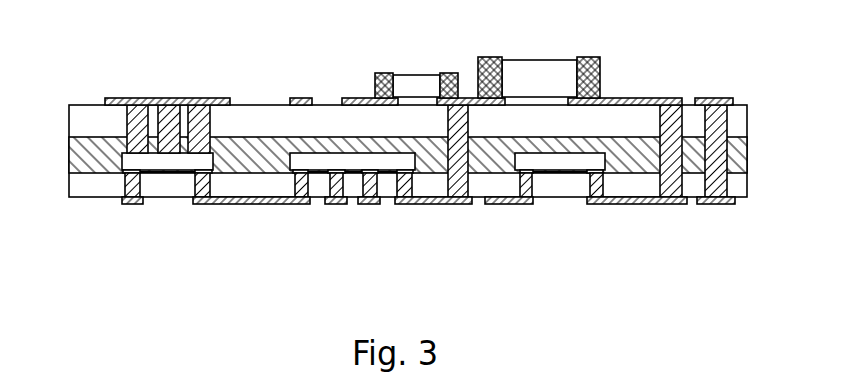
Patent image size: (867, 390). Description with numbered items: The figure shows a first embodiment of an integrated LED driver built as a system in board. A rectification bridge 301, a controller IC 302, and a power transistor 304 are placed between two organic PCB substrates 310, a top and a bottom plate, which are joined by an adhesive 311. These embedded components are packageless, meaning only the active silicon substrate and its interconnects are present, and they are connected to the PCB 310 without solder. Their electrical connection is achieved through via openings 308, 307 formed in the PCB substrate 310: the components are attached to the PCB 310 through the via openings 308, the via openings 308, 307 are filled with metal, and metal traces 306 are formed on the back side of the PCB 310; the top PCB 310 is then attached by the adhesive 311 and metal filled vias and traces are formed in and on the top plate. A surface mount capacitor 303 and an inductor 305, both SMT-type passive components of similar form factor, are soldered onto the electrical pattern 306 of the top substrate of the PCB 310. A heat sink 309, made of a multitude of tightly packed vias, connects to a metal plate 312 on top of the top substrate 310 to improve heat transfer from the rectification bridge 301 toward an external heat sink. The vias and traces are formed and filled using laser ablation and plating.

The rectification bridge 301 is at (154, 203).
The controller IC 302 is at (329, 197).
The SMT capacitor 303 is at (428, 59).
The power transistor 304 is at (546, 200).
The inductor 305 is at (539, 58).
The metal traces 306 is at (682, 118).
The via opening 307 is at (683, 171).
The via opening 308 is at (369, 219).
The heat sink 309 is at (204, 95).
The organic PCB substrate 310 is at (69, 112).
The adhesive 311 is at (443, 162).
The metal plate 312 is at (167, 55).